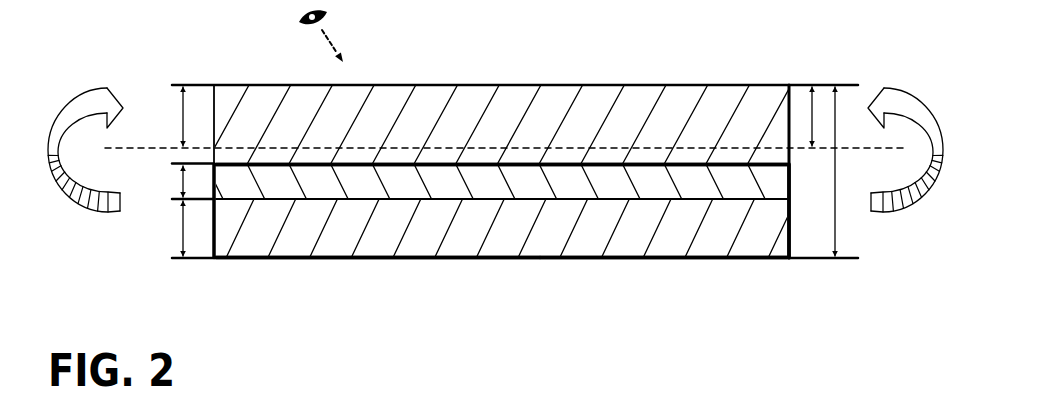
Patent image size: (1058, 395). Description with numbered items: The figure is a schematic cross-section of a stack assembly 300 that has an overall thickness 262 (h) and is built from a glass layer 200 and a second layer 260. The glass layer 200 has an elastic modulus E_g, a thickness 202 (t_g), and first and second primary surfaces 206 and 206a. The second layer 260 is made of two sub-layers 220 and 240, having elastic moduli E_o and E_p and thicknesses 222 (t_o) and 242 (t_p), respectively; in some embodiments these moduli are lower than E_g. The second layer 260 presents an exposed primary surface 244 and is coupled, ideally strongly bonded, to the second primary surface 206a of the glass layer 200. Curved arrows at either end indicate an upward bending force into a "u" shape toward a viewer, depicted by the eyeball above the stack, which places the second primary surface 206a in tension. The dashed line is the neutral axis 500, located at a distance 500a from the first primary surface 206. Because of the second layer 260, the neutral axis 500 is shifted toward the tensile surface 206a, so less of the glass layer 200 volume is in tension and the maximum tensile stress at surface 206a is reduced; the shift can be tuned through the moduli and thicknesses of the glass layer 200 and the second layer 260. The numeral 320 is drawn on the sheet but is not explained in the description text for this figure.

The glass layer 200 is at (298, 128).
The thickness 202 is at (182, 118).
The first primary surface 206 is at (601, 82).
The second primary surface 206a is at (556, 172).
The sub-layer 220 is at (298, 196).
The thickness 222 is at (186, 177).
The sub-layer 240 is at (298, 232).
The thickness 242 is at (183, 218).
The exposed primary surface 244 is at (599, 266).
The second layer 260 is at (460, 266).
The thickness 262 is at (835, 220).
The stack assembly 300 is at (800, 269).
The substrate 320 is at (703, 389).
The neutral axis 500 is at (862, 148).
The distance 500a is at (810, 118).